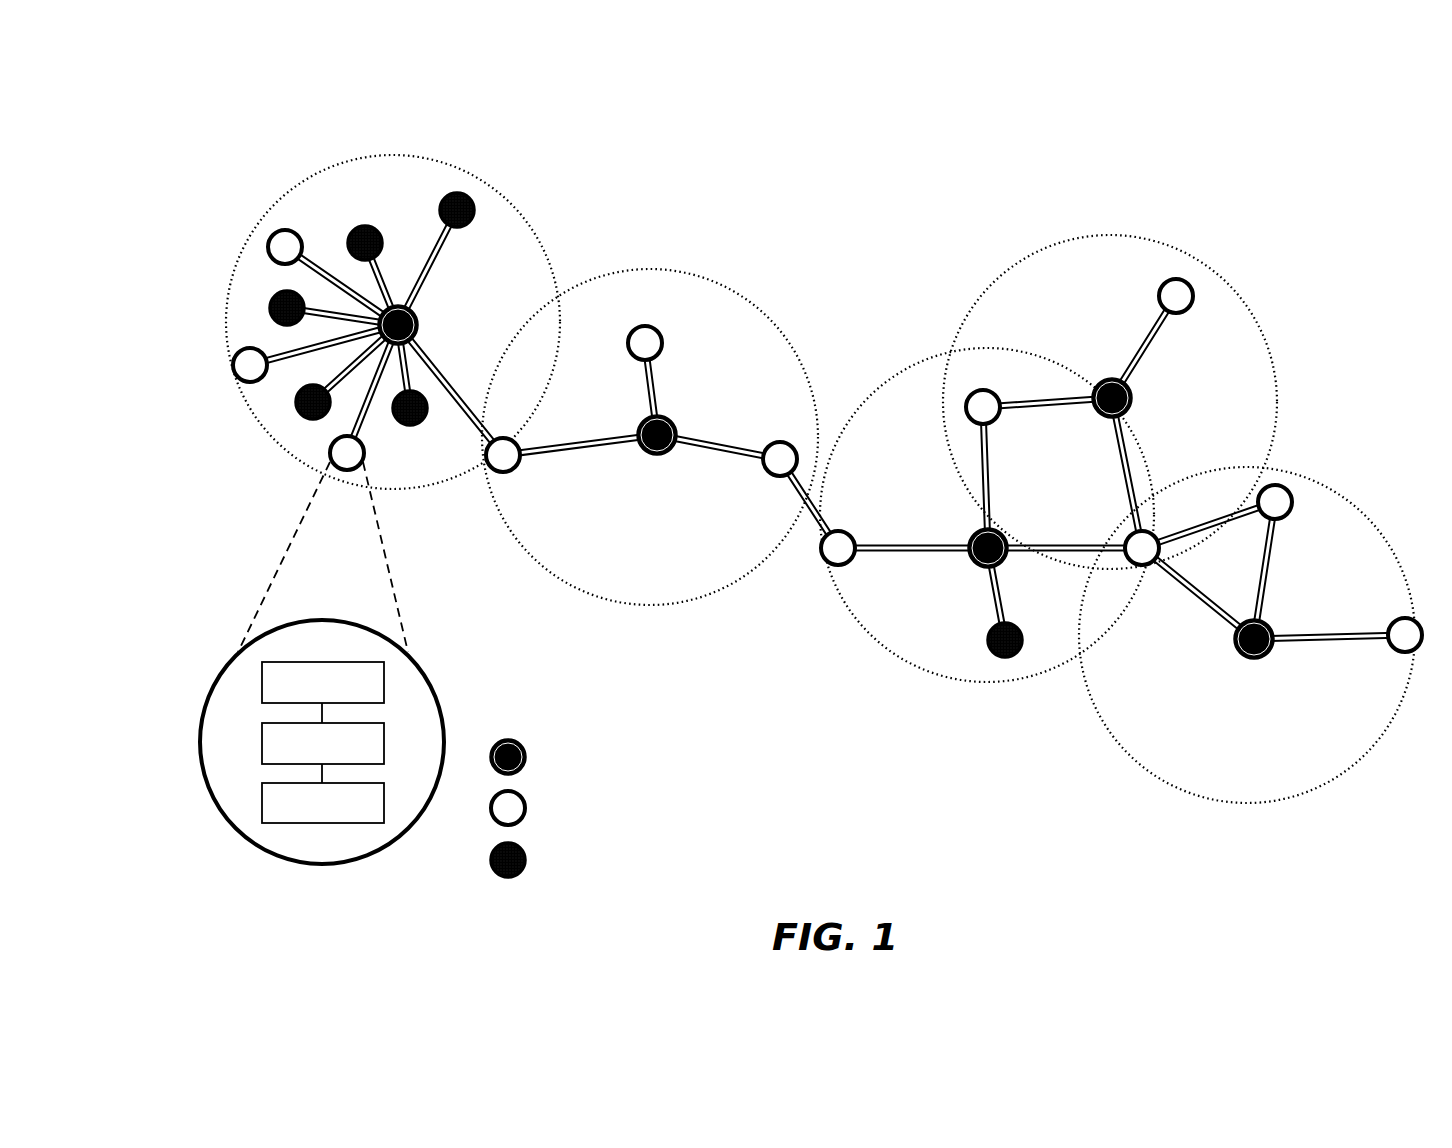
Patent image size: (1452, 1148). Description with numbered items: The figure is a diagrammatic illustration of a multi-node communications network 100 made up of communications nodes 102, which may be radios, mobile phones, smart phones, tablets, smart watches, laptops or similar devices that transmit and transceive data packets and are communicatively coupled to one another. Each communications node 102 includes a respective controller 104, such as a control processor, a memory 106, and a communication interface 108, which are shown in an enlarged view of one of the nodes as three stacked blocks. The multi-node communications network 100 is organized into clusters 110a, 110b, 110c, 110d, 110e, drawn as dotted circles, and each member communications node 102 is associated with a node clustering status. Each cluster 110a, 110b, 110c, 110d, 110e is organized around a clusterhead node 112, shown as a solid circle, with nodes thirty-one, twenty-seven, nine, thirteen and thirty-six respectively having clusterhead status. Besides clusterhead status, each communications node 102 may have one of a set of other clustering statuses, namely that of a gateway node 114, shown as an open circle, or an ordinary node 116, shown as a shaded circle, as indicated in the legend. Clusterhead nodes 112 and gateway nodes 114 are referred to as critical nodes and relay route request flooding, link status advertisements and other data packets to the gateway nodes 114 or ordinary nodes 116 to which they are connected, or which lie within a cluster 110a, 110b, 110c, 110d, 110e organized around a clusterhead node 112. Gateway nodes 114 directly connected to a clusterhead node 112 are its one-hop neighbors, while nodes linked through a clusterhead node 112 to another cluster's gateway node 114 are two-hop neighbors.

The multi-node communications network 100 is at (206, 113).
The communications node 102 is at (427, 313).
The controller 104 is at (305, 696).
The memory 106 is at (305, 757).
The communication interface 108 is at (305, 817).
The cluster 110a is at (347, 204).
The cluster 110b is at (605, 576).
The cluster 110c is at (877, 654).
The cluster 110d is at (1227, 781).
The cluster 110e is at (1185, 387).
The clusterhead node 112 is at (1097, 383).
The gateway node 114 is at (780, 440).
The ordinary node 116 is at (302, 415).